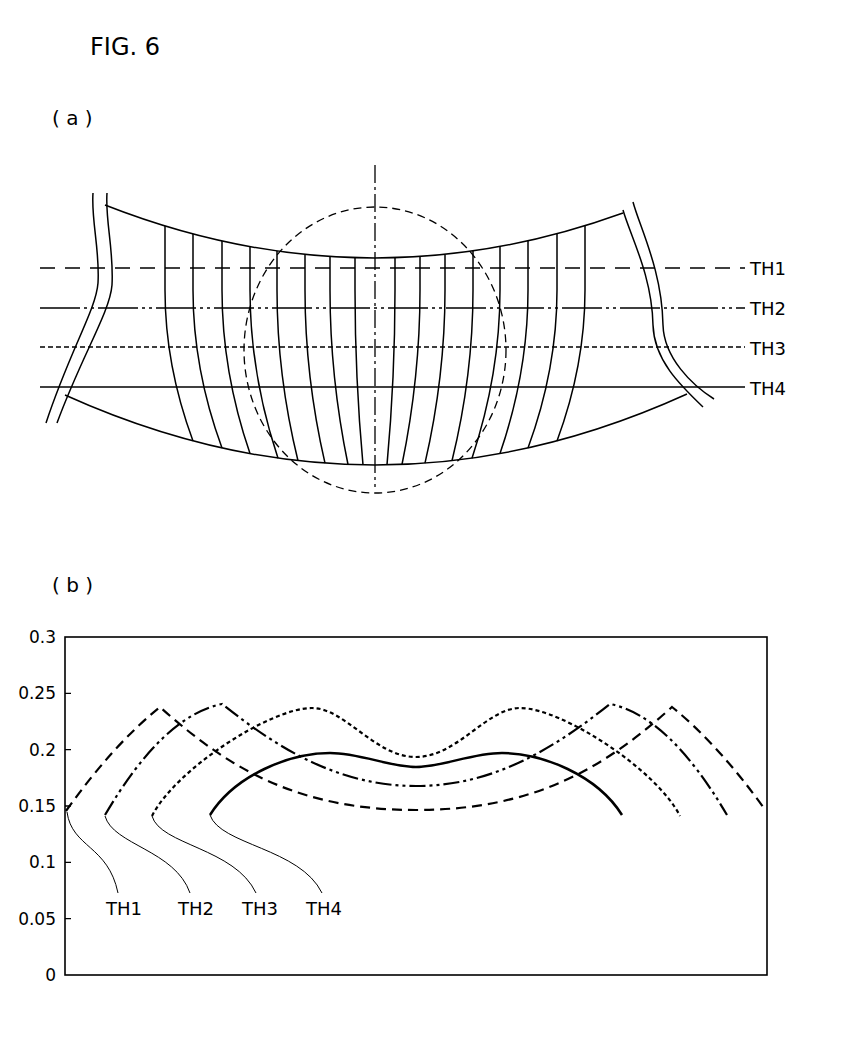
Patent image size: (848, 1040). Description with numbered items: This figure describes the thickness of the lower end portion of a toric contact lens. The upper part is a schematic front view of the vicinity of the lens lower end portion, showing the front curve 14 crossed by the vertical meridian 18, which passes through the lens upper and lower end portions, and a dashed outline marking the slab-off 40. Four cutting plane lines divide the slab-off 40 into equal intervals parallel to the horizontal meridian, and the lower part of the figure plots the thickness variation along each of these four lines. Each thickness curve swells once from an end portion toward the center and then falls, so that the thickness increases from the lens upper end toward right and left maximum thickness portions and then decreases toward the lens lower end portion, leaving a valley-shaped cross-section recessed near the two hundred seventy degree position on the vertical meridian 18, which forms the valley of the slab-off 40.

The front curve 14 is at (610, 260).
The vertical meridian 18 is at (375, 167).
The slab-off 40 is at (448, 226).